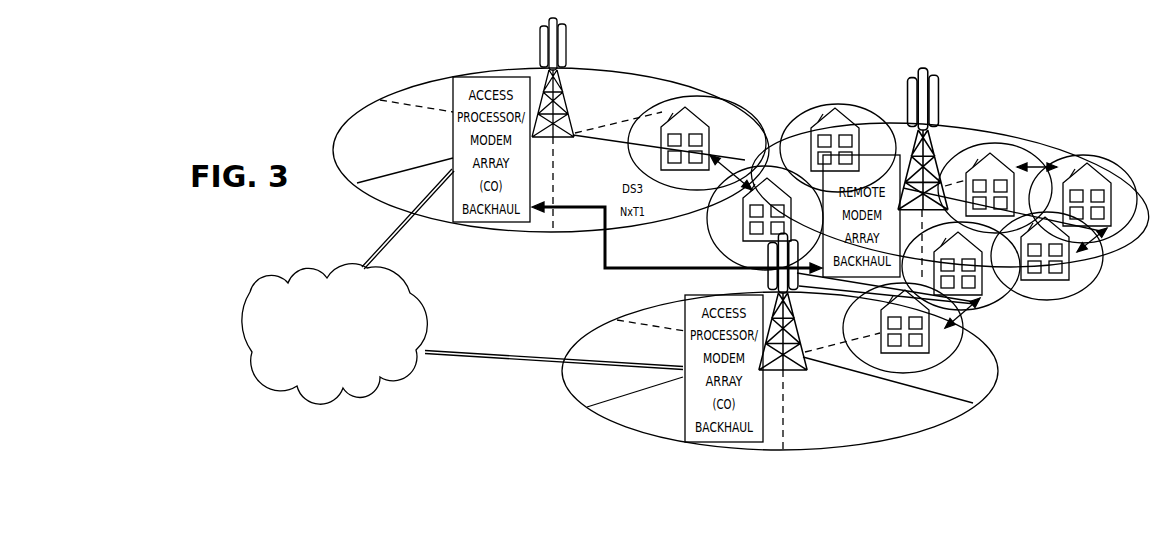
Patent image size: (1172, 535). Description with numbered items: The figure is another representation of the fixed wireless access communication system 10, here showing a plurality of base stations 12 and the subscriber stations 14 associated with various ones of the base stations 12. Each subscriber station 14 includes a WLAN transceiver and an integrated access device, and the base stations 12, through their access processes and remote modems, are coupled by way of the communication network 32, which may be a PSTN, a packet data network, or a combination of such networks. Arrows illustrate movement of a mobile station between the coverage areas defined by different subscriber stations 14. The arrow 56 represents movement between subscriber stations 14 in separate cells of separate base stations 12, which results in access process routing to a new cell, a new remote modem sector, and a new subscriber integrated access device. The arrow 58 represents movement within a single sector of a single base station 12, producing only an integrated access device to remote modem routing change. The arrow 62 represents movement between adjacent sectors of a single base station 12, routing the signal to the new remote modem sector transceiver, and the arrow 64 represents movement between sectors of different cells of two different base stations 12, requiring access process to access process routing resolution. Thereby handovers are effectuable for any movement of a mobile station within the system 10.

The fixed wireless access communication system 10 is at (822, 45).
The base station 12 is at (540, 33).
The subscriber station 14 is at (697, 113).
The communication network 32 is at (307, 262).
The arrow 56 is at (740, 168).
The arrow 58 is at (1043, 165).
The arrow 62 is at (1103, 258).
The arrow 64 is at (973, 310).